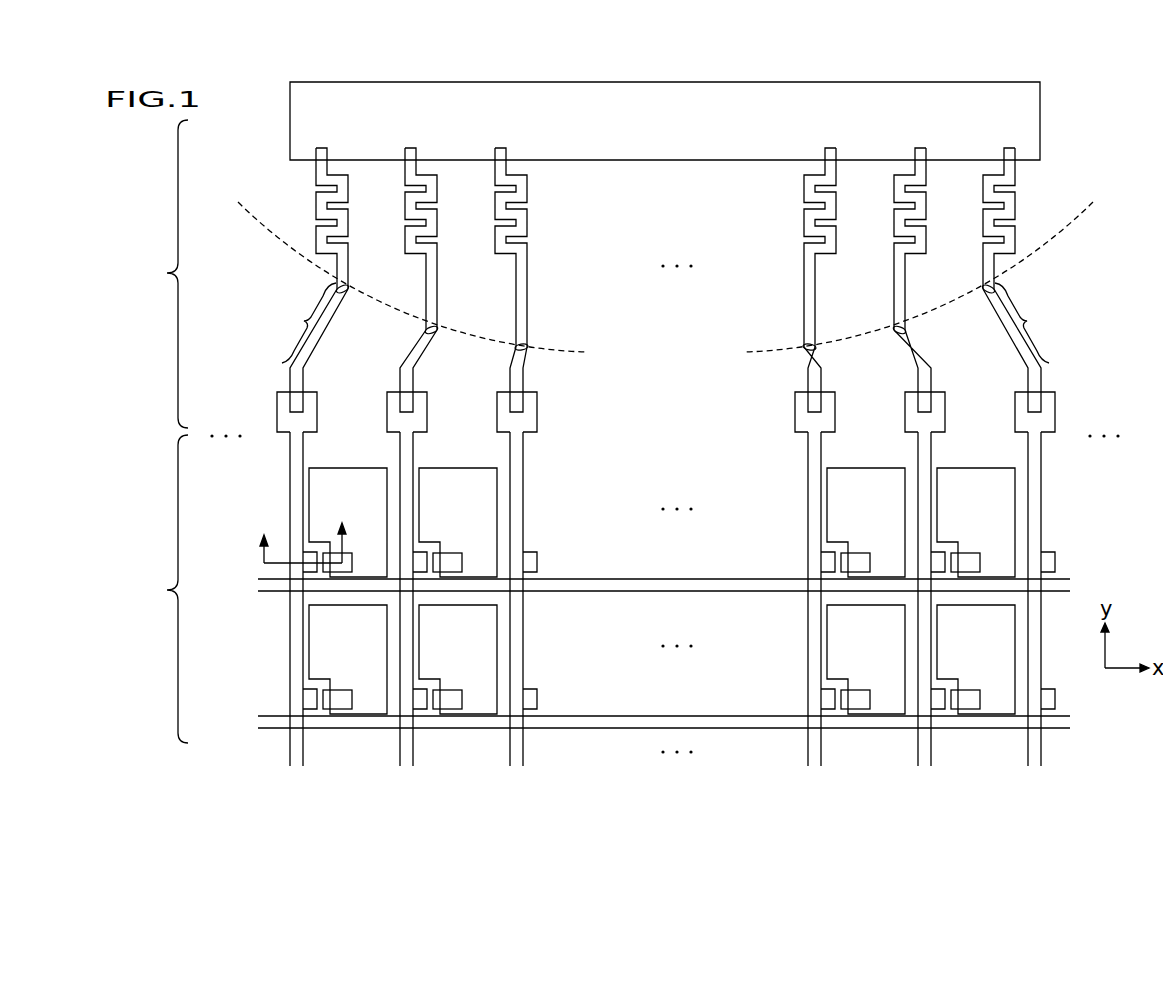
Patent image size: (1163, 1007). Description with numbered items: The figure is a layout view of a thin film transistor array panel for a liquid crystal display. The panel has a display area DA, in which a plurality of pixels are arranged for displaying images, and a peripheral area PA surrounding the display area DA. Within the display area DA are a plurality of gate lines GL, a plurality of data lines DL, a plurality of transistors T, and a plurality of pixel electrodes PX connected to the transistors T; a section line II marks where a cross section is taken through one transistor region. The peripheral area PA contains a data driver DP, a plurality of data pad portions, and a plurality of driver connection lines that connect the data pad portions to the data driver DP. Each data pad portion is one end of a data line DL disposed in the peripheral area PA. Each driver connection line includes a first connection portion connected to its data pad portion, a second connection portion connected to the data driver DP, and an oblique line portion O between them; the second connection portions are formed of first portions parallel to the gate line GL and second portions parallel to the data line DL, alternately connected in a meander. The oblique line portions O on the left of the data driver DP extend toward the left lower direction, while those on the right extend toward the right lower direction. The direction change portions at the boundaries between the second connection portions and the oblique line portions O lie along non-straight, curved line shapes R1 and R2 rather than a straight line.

The data driver DP is at (1040, 116).
The curved line shape R1 is at (402, 265).
The curved line shape R2 is at (931, 265).
The peripheral area PA is at (161, 274).
The display area DA is at (161, 589).
The oblique line portion O is at (665, 323).
The data line DL is at (305, 745).
The gate line GL is at (285, 591).
The pixel electrode PX is at (480, 491).
The transistor T is at (430, 586).
The section line II-II' II is at (302, 531).